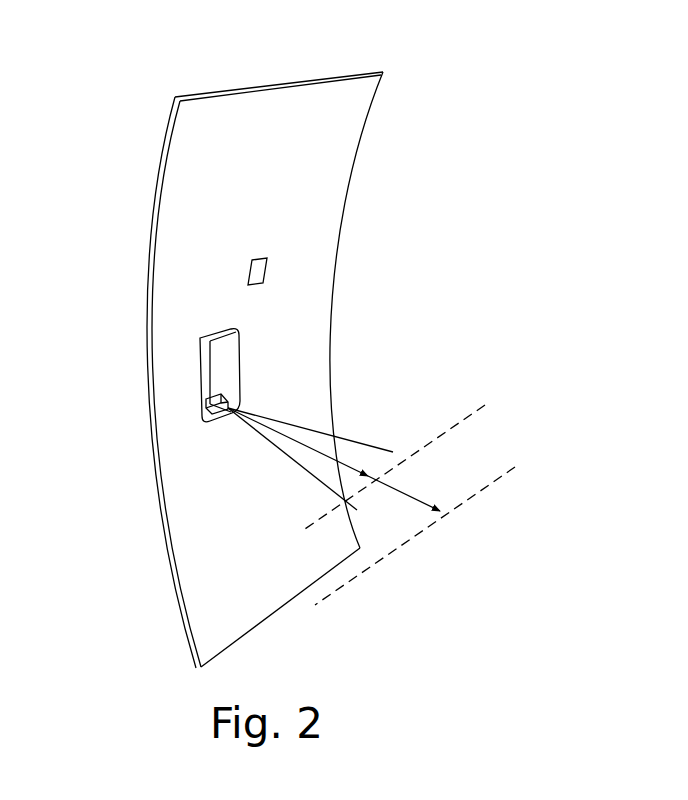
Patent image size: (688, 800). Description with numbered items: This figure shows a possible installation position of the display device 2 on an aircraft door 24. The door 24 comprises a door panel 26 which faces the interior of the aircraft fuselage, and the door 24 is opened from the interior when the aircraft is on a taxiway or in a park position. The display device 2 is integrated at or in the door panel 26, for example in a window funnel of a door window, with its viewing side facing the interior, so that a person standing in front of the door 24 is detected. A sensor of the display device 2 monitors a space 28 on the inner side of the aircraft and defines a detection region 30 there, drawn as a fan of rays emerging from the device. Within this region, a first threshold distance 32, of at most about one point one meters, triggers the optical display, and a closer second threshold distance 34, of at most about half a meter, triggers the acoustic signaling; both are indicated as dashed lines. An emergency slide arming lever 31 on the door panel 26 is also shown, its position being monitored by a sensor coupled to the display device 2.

The display device 2 is at (224, 395).
The aircraft door 24 is at (273, 113).
The door panel 26 is at (289, 220).
The space 28 is at (450, 358).
The detection region 30 is at (309, 426).
The emergency slide arming lever 31 is at (250, 267).
The first threshold distance 32 is at (431, 526).
The second threshold distance 34 is at (410, 459).